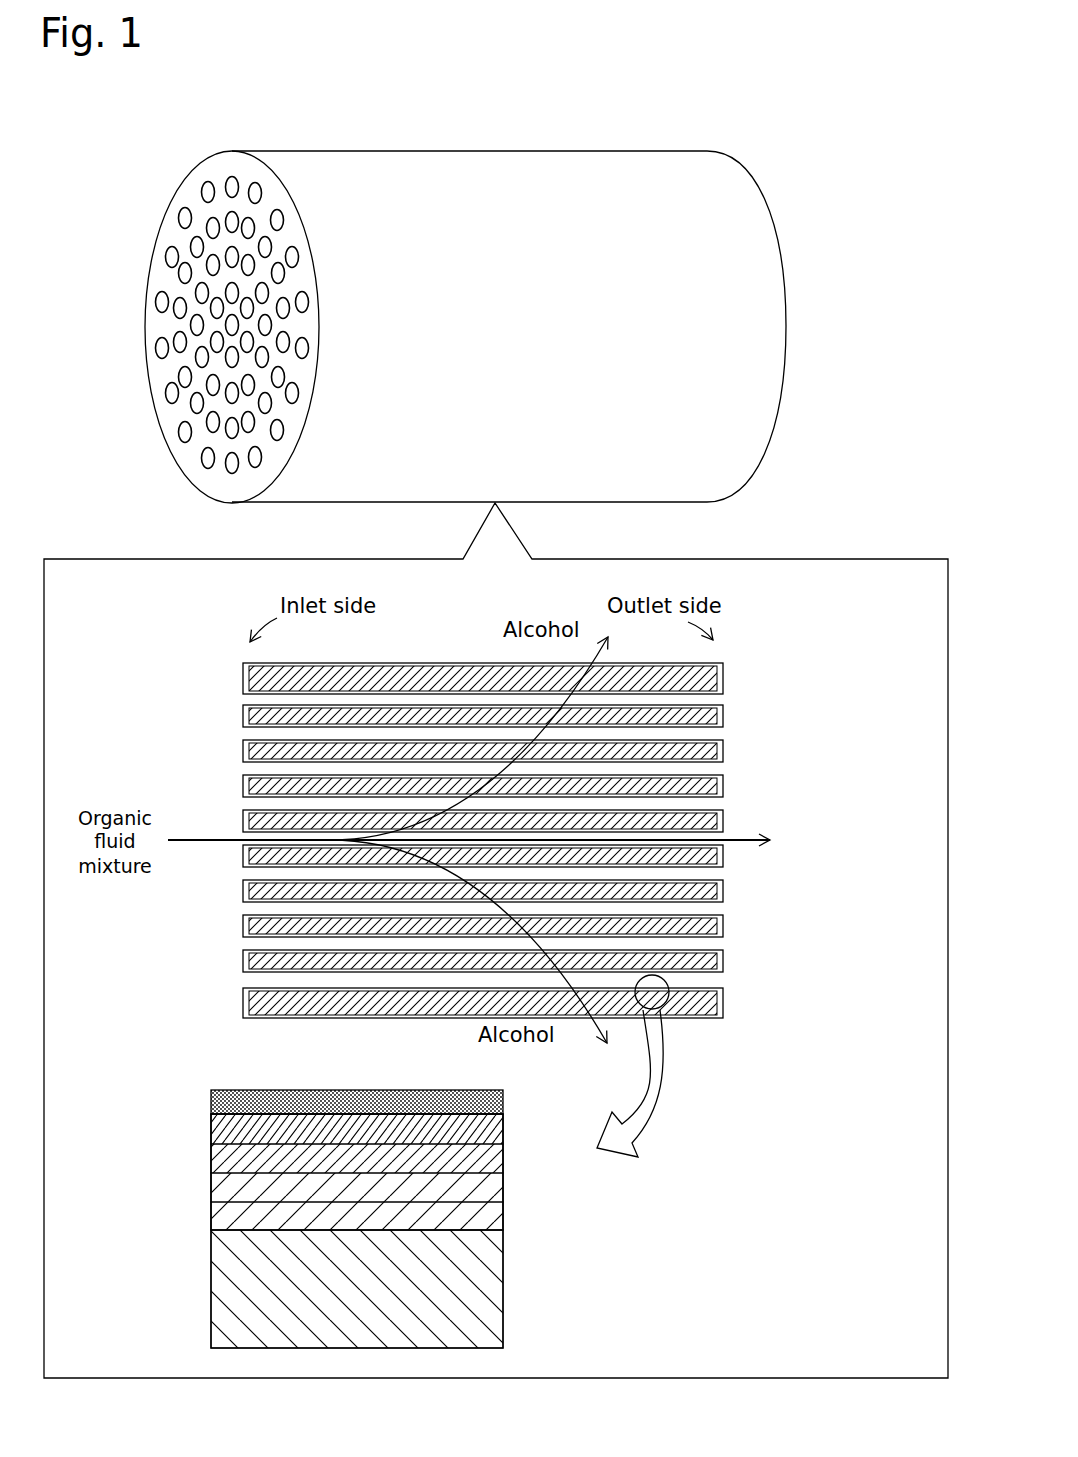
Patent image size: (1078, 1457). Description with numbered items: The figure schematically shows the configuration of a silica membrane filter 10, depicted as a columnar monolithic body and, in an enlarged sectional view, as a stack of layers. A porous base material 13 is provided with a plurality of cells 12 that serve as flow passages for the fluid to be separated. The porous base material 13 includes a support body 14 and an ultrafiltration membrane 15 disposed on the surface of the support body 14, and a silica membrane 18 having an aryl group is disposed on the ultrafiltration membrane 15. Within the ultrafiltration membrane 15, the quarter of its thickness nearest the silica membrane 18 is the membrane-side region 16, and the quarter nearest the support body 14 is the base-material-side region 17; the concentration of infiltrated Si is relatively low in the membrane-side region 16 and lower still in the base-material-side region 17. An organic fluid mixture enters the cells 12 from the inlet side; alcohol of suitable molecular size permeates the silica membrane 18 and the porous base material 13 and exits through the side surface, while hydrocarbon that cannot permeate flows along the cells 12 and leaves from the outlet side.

The silica membrane filter 10 is at (698, 121).
The cells 12 is at (163, 351).
The porous base material 13 is at (167, 222).
The support body 14 is at (197, 1232).
The ultrafiltration membrane 15 is at (197, 1118).
The membrane-side region 16 is at (517, 1113).
The base-material-side region 17 is at (517, 1202).
The silica membrane 18 is at (197, 1092).